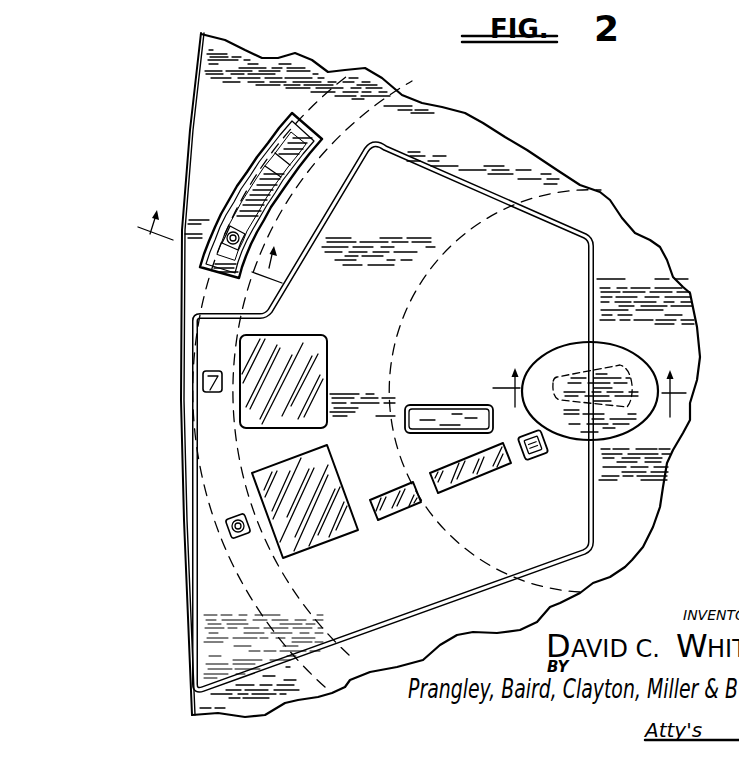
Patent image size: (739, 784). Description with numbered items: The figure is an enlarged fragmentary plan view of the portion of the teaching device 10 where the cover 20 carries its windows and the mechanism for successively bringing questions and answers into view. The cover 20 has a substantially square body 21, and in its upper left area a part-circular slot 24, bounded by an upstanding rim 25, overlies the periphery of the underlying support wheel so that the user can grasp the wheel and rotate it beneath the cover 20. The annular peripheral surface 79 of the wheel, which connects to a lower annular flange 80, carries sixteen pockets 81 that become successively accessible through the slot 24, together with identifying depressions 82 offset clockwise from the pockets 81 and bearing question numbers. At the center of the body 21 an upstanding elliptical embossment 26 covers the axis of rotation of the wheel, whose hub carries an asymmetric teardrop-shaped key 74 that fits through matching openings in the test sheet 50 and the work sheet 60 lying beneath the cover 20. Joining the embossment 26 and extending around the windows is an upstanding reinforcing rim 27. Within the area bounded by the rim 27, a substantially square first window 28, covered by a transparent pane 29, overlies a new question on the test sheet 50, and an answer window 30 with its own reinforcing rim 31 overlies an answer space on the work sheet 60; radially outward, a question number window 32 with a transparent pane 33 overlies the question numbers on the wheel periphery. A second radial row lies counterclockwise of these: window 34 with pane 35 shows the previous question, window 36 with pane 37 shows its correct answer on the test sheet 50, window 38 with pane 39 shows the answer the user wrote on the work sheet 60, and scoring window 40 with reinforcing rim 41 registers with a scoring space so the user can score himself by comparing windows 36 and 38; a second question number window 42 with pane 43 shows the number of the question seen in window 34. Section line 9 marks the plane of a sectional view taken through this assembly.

The section line 9- 9 is at (589, 393).
The teaching device 10 is at (210, 257).
The cover 20 is at (282, 75).
The square body 21 is at (540, 178).
The part-circular slot 24 is at (244, 183).
The upstanding rim 25 is at (227, 209).
The elliptical embossment 26 is at (603, 358).
The reinforcing rim 27 is at (399, 145).
The first window 28 is at (245, 404).
The transparent pane 29 is at (263, 428).
The answer window 30 is at (447, 411).
The reinforcing rim 31 is at (415, 406).
The question number window 32 is at (203, 378).
The transparent pane 33 is at (212, 385).
The window 34 is at (304, 553).
The transparent pane 35 is at (343, 527).
The window 36 is at (393, 513).
The transparent pane 37 is at (410, 502).
The window 38 is at (465, 491).
The transparent pane 39 is at (498, 463).
The window 40 is at (537, 456).
The reinforcing rim 41 is at (548, 449).
The second question number window 42 is at (229, 547).
The transparent pane 43 is at (226, 533).
The test sheet 50 is at (406, 99).
The work sheet 60 is at (601, 192).
The key 74 is at (637, 420).
The annular peripheral surface 79 is at (273, 179).
The lower annular flange 80 is at (197, 506).
The pockets 81 is at (302, 137).
The depressions 82 is at (246, 240).